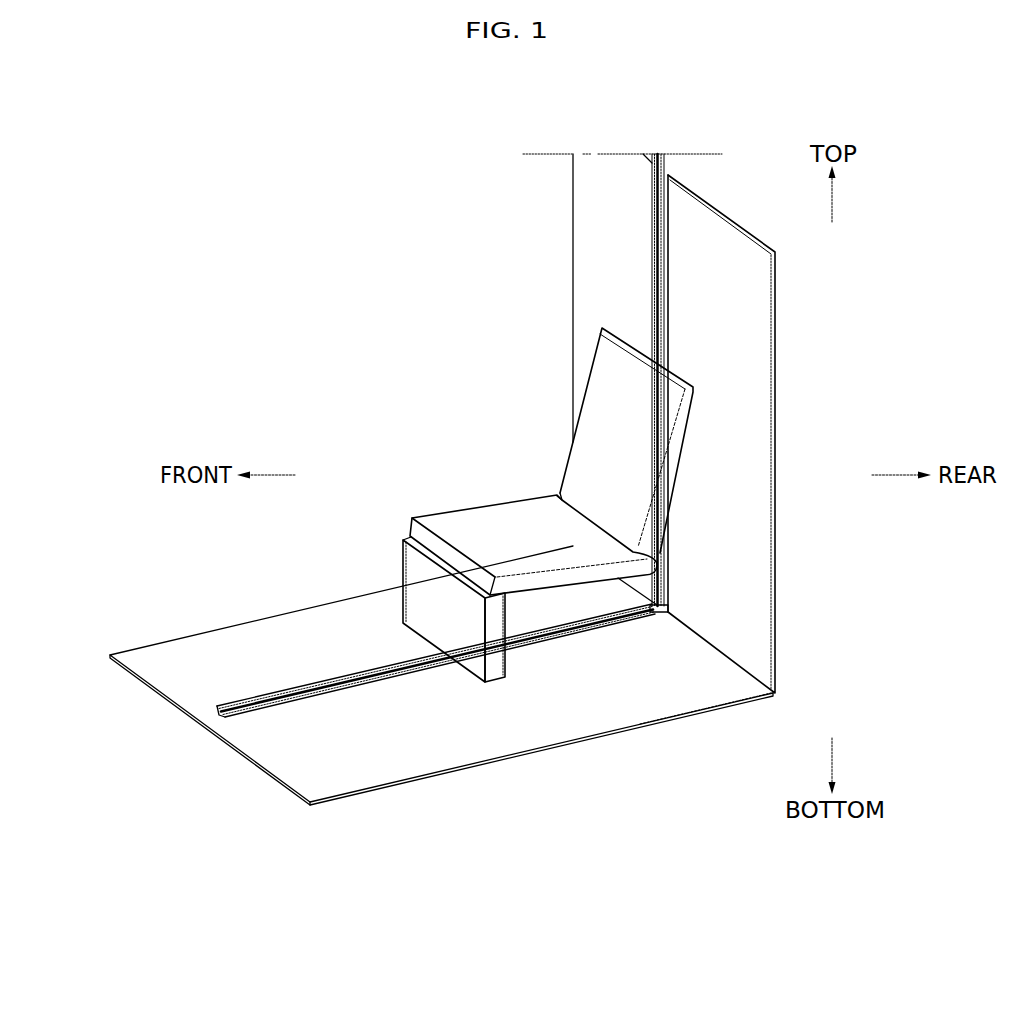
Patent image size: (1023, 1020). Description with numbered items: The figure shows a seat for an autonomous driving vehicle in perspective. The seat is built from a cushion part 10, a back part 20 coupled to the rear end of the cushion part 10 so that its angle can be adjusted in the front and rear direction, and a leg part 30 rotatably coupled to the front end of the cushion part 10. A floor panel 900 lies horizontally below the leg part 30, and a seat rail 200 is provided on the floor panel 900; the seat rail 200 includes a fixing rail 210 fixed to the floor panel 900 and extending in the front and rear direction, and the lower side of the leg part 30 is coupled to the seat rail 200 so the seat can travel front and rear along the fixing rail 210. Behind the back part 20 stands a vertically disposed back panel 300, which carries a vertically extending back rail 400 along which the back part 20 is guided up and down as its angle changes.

The cushion part 10 is at (455, 522).
The back part 20 is at (600, 412).
The leg part 30 is at (413, 568).
The seat rail 200 is at (387, 633).
The fixing rail 210 is at (248, 700).
The back panel 300 is at (757, 356).
The back rail 400 is at (652, 257).
The floor panel 900 is at (450, 748).